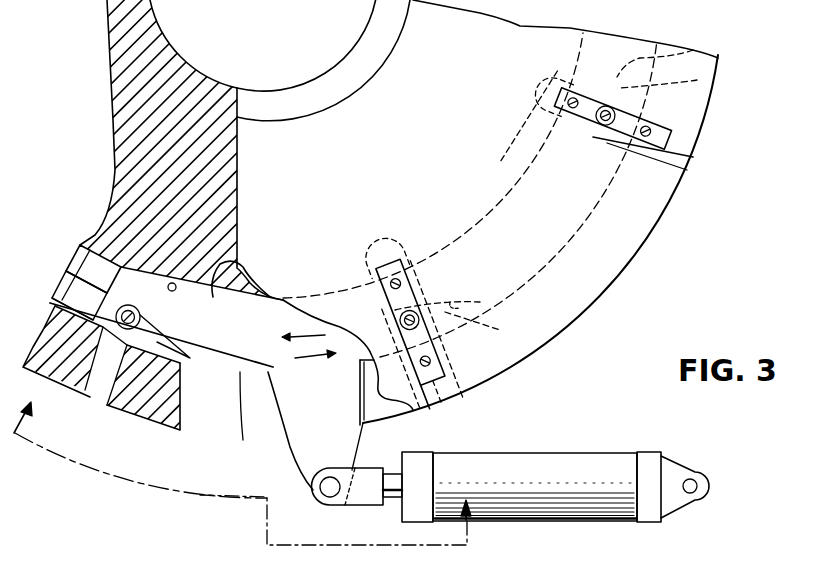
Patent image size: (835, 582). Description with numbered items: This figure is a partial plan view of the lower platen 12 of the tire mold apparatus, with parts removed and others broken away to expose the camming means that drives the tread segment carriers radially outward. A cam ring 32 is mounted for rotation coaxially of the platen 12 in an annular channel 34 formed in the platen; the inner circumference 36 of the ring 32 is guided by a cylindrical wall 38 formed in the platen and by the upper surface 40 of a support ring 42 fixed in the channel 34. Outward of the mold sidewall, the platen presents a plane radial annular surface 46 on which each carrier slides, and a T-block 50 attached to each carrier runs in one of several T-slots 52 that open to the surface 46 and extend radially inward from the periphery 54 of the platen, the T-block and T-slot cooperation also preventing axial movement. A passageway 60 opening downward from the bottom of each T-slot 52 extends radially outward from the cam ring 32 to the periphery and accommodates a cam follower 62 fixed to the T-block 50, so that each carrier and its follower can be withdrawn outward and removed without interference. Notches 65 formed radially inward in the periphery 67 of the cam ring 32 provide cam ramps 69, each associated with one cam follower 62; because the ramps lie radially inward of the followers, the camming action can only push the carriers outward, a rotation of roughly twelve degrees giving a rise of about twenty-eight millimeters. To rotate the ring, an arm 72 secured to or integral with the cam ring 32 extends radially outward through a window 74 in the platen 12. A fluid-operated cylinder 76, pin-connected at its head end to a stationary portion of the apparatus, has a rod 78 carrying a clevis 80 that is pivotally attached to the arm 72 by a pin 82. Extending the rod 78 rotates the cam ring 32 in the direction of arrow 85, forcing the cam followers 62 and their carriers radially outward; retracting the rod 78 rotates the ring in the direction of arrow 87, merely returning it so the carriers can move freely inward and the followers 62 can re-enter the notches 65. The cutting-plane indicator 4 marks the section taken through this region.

The section line 4- 4 is at (243, 451).
The lower platen 12 is at (648, 230).
The cam ring 32 is at (110, 265).
The annular channel 34 is at (116, 240).
The inner circumference 36 is at (237, 250).
The cylindrical wall 38 is at (171, 284).
The upper surface 40 is at (70, 290).
The support ring 42 is at (53, 293).
The plane radial annular surface 46 is at (603, 243).
The T-block 50 is at (288, 0).
The T-slot 52 is at (440, 347).
The periphery 54 is at (607, 290).
The passageway 60 is at (87, 392).
The cam follower 62 is at (73, 290).
The notch 65 is at (160, 340).
The periphery of the cam ring 67 is at (587, 333).
The cam ramp 69 is at (177, 338).
The arm 72 is at (292, 465).
The window 74 is at (183, 405).
The fluid-operated cylinder 76 is at (580, 462).
The rod 78 is at (388, 474).
The clevis 80 is at (367, 497).
The pin 82 is at (327, 495).
The arrow 85 is at (307, 333).
The arrow 87 is at (313, 358).